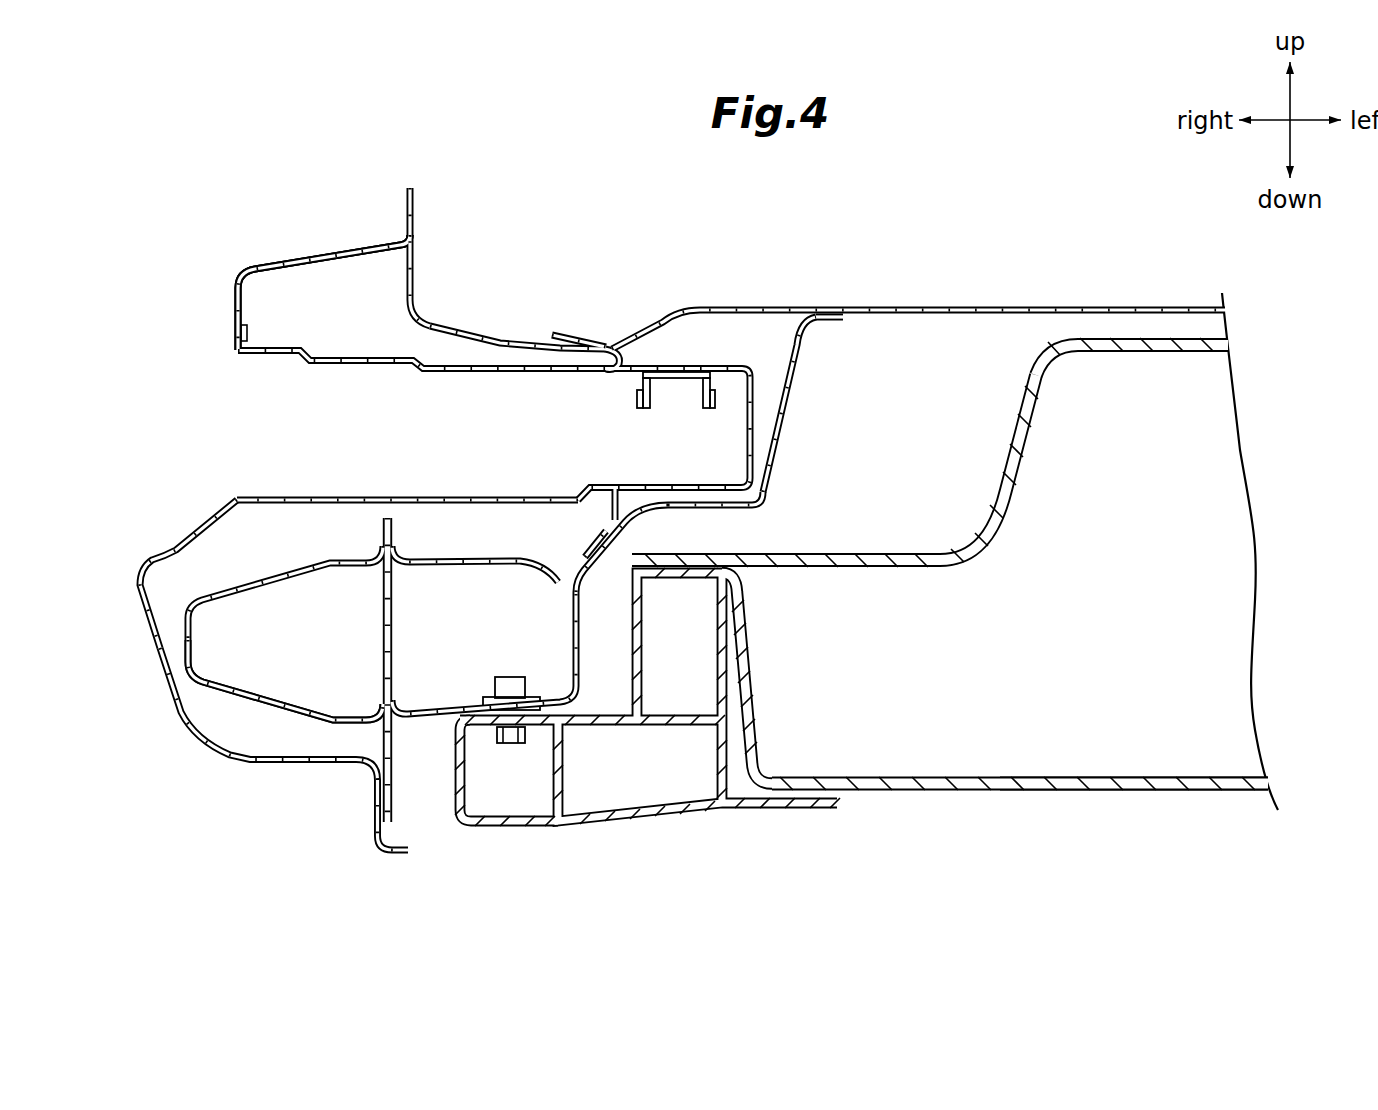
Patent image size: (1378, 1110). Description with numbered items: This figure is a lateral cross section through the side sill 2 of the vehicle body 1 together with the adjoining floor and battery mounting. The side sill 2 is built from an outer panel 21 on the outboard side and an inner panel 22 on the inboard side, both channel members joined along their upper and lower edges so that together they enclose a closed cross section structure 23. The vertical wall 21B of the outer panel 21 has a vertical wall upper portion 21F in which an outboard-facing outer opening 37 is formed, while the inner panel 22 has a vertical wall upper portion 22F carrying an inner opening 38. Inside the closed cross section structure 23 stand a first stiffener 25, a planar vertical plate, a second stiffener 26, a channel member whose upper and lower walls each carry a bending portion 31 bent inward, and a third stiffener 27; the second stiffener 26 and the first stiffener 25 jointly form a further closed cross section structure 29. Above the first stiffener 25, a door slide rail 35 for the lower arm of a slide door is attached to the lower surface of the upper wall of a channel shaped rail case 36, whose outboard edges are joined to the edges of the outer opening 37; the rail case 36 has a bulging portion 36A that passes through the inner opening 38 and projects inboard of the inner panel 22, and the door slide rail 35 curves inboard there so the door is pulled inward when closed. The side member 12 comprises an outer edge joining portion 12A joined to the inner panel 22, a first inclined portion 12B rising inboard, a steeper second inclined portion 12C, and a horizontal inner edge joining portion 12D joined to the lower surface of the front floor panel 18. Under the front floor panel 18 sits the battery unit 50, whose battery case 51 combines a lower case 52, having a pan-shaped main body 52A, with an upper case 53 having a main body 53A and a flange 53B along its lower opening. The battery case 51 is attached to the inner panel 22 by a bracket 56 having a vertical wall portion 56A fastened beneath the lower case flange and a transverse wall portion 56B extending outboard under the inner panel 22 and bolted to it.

The vehicle front body structure 1 is at (240, 152).
The side sill 2 is at (242, 675).
The side member 12 is at (750, 454).
The outer edge joining portion 12A is at (622, 550).
The first inclined portion 12B is at (700, 496).
The second inclined portion 12C is at (802, 375).
The inner edge joining portion 12D is at (832, 320).
The front floor panel 18 is at (665, 320).
The outer panel 21 is at (291, 269).
The vertical wall 21B is at (158, 546).
The vertical wall upper portion 21F is at (240, 320).
The inner panel 22 is at (525, 384).
The vertical wall upper portion 22F is at (612, 508).
The closed cross section structure 23 is at (340, 264).
The first stiffener 25 is at (382, 632).
The second stiffener 26 is at (325, 553).
The third stiffener 27 is at (465, 553).
The closed cross section structure 29 is at (196, 683).
The bending portion 31 is at (208, 683).
The door slide rail 35 is at (643, 400).
The rail case 36 is at (445, 381).
The bulging portion 36A is at (713, 363).
The outer opening 37 is at (236, 494).
The inner opening 38 is at (611, 371).
The battery unit 50 is at (950, 617).
The battery case 51 is at (1147, 792).
The lower case 52 is at (1058, 792).
The main body 52A is at (900, 792).
The upper case 53 is at (1147, 354).
The main body 53A is at (1022, 458).
The flange 53B is at (705, 556).
The bracket 56 is at (650, 735).
The vertical wall portion 56A is at (725, 655).
The transverse wall portion 56B is at (512, 828).